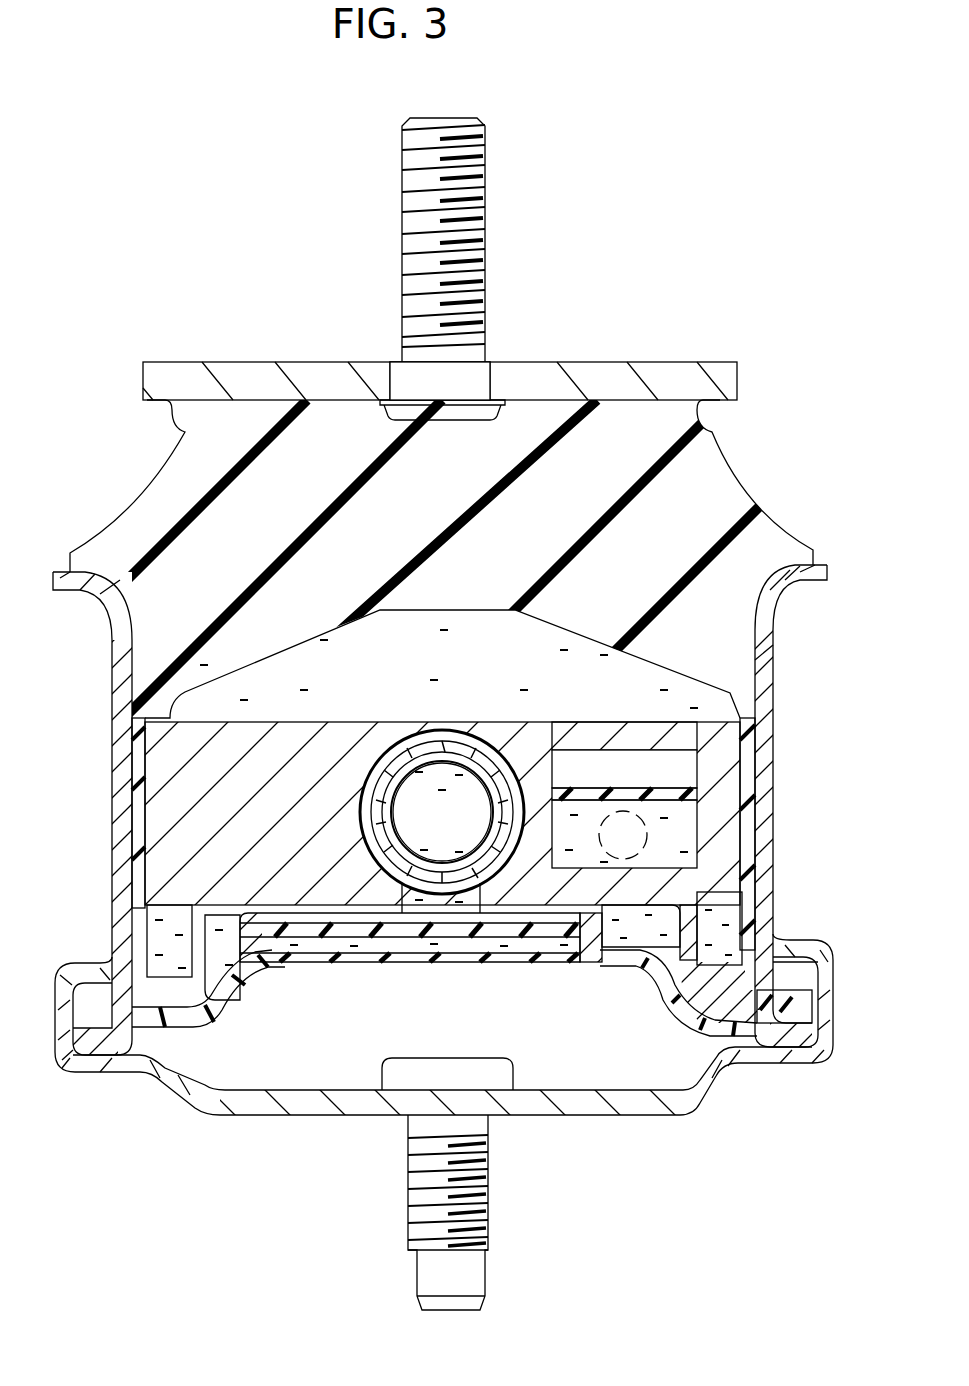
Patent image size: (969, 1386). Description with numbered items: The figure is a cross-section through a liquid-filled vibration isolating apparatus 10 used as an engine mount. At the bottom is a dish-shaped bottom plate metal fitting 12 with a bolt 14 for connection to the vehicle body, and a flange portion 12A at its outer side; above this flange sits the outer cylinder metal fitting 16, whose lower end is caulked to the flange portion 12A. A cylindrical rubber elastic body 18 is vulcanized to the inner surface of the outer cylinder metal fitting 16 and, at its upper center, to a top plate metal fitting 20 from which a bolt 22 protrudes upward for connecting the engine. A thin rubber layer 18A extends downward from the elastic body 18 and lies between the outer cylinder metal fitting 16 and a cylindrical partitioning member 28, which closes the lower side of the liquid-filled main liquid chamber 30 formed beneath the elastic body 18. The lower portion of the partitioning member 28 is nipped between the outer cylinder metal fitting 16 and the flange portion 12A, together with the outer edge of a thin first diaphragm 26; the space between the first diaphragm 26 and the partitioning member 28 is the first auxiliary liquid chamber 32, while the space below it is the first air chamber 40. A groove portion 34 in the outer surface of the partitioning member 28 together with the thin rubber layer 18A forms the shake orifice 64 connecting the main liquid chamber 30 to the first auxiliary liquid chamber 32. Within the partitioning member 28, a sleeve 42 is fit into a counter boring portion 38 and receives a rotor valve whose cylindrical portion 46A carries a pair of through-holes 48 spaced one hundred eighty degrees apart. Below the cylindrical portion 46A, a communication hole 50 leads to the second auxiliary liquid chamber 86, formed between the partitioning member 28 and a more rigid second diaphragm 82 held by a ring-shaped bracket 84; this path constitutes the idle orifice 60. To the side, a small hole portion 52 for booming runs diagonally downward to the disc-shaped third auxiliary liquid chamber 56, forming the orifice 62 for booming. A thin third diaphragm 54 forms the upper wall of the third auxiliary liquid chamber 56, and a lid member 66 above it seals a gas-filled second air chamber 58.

The vibration isolating apparatus 10 is at (670, 263).
The bottom plate metal fitting 12 is at (444, 1071).
The flange portion 12A is at (125, 1073).
The bolt 14 is at (489, 1186).
The outer cylinder metal fitting 16 is at (776, 820).
The elastic body 18 is at (433, 711).
The thin rubber layer 18A is at (746, 745).
The top plate metal fitting 20 is at (259, 362).
The bolt 22 is at (488, 216).
The first diaphragm 26 is at (610, 965).
The partitioning member 28 is at (506, 726).
The main liquid chamber 30 is at (478, 673).
The first auxiliary liquid chamber 32 is at (655, 990).
The groove portion 34 is at (818, 945).
The counter boring portion 38 is at (452, 762).
The first air chamber 40 is at (436, 1050).
The sleeve 42 is at (398, 762).
The cylindrical portion 46A is at (380, 770).
The through-holes 48 is at (404, 884).
The communication hole 50 is at (415, 930).
The hole portion for booming 52 is at (562, 945).
The third diaphragm 54 is at (700, 795).
The third auxiliary liquid chamber 56 is at (700, 845).
The second air chamber 58 is at (595, 788).
The idle orifice 60 is at (487, 953).
The orifice for booming 62 is at (598, 745).
The shake orifice 64 is at (742, 925).
The lid member 66 is at (742, 700).
The second diaphragm 82 is at (545, 965).
The bracket 84 is at (276, 962).
The second auxiliary liquid chamber 86 is at (360, 937).